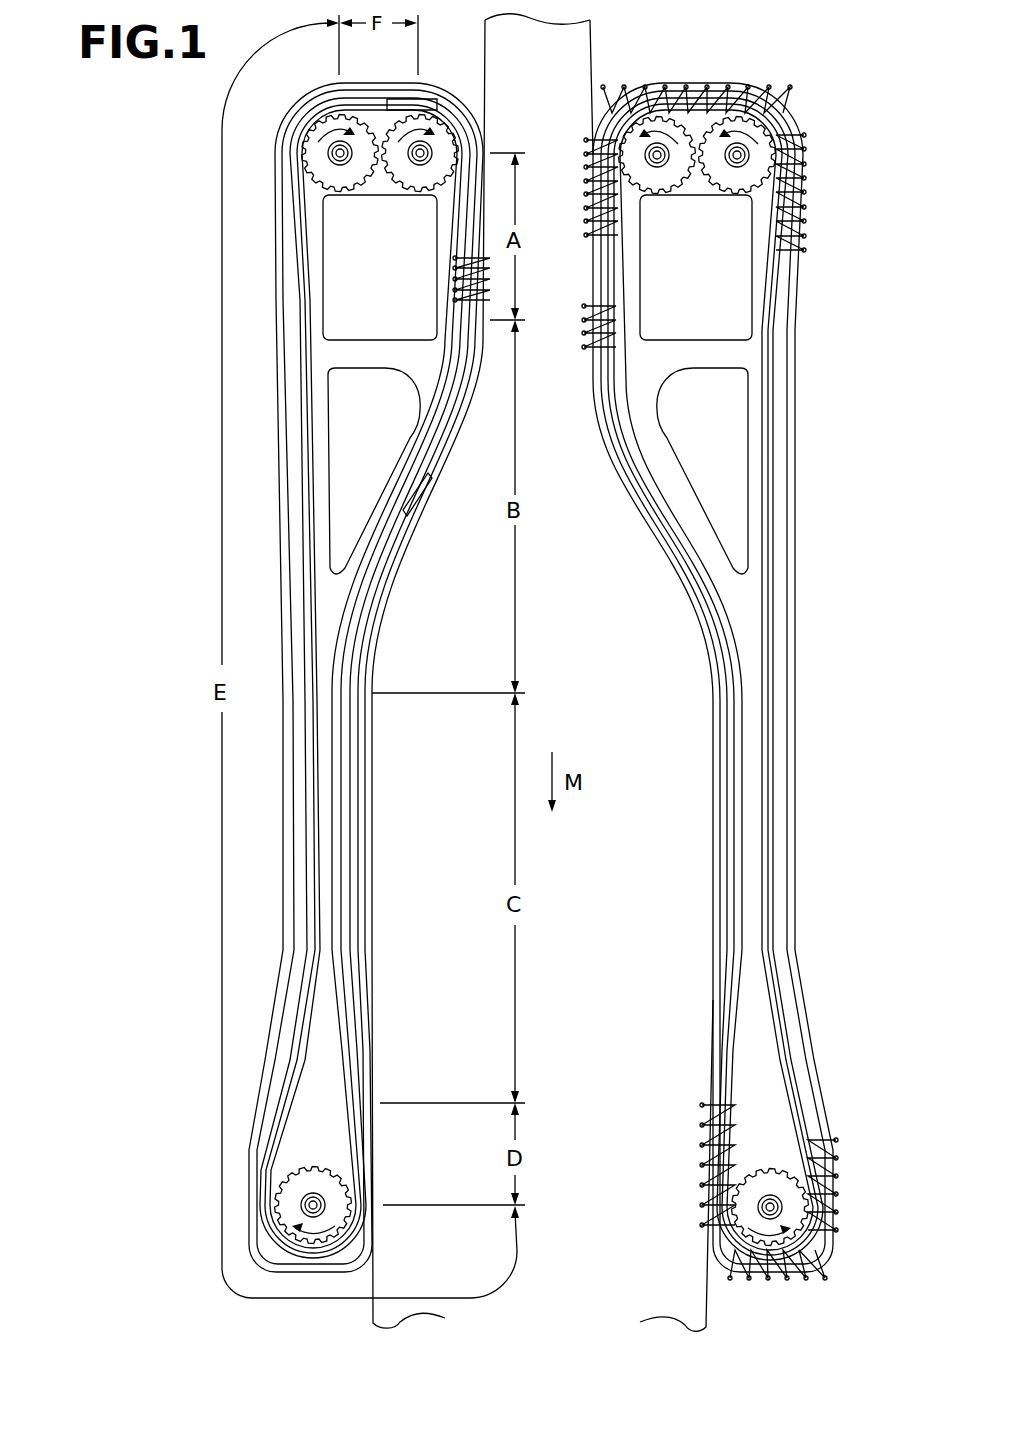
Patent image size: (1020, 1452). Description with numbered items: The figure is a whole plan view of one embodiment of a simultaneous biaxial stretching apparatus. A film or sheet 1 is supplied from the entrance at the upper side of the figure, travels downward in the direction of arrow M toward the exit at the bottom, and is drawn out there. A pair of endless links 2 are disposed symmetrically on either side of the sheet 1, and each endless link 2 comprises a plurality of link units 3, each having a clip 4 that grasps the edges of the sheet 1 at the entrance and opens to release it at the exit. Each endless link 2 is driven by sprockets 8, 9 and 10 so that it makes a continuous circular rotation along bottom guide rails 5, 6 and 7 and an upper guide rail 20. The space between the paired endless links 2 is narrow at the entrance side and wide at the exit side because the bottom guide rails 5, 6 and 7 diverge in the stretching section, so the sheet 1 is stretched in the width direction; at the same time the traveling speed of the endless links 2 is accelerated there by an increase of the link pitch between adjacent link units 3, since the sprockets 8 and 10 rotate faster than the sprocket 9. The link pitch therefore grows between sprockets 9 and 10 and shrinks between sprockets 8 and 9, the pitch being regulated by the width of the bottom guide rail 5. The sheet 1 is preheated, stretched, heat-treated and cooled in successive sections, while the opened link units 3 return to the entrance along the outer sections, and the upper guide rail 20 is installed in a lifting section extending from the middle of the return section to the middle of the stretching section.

The film or sheet 1 is at (590, 50).
The endless link 2 is at (790, 113).
The link unit 3 is at (600, 362).
The clip 4 is at (585, 238).
The bottom guide rail 5 is at (718, 595).
The bottom guide rail 6 is at (677, 548).
The bottom guide rail 7 is at (642, 497).
The sprocket 8 is at (346, 192).
The sprocket 9 is at (420, 190).
The sprocket 10 is at (320, 1166).
The upper guide rail 20 is at (428, 476).